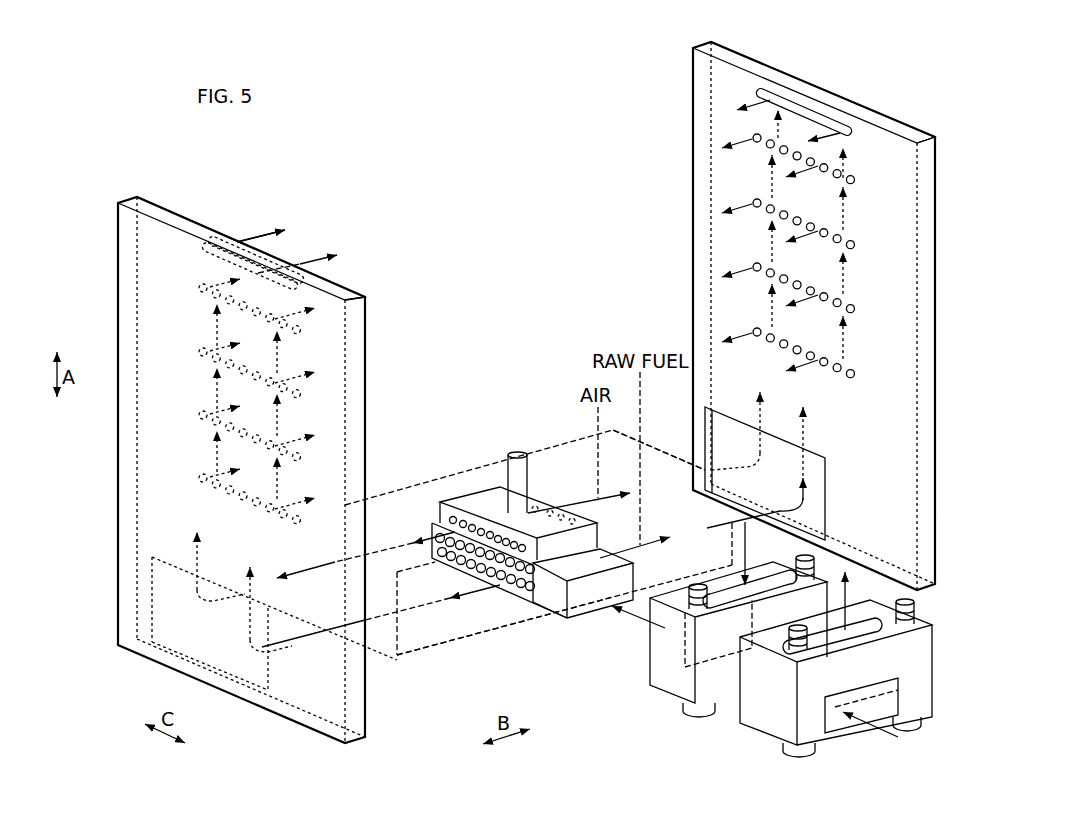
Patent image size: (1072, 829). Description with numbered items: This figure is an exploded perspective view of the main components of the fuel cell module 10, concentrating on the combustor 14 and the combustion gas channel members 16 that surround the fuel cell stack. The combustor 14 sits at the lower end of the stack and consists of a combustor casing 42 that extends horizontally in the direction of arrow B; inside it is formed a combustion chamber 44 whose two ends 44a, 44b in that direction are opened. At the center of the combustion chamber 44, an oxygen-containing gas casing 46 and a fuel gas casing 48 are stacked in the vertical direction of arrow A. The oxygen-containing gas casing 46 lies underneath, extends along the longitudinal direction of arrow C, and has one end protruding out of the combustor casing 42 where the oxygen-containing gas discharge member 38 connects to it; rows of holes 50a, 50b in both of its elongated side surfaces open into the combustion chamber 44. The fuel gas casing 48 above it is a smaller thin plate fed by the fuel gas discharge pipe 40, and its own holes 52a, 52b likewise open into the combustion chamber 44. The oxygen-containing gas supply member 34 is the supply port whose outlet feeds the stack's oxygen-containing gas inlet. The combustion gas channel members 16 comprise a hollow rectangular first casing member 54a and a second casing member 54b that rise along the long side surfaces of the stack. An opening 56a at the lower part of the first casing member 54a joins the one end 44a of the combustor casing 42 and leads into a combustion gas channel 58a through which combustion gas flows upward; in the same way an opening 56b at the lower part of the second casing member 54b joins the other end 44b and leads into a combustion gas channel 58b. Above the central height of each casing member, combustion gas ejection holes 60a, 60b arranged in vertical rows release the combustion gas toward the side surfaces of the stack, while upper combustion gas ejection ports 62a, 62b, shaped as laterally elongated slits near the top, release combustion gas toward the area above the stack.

The fuel cell module 10 is at (352, 142).
The combustor 14 is at (516, 538).
The combustion gas channel members 16 is at (952, 192).
The oxygen-containing gas supply member 34 is at (923, 652).
The oxygen-containing gas discharge member 38 is at (670, 690).
The fuel gas discharge pipe 40 is at (517, 451).
The combustor casing 42 is at (417, 653).
The combustion chamber 44 is at (457, 636).
The one end of combustion chamber 44a is at (657, 451).
The other end of combustion chamber 44b is at (323, 630).
The oxygen-containing gas casing 46 is at (563, 622).
The fuel gas casing 48 is at (492, 483).
The holes 50a is at (598, 583).
The holes 50b is at (528, 583).
The holes 52a is at (547, 520).
The holes 52b is at (453, 519).
The first casing member 54a is at (910, 127).
The second casing member 54b is at (162, 206).
The opening 56a is at (817, 510).
The opening 56b is at (166, 576).
The combustion gas channel 58a is at (893, 432).
The combustion gas channel 58b is at (152, 453).
The combustion gas ejection holes 60a is at (855, 308).
The combustion gas ejection holes 60b is at (203, 356).
The upper combustion gas ejection port 62a is at (804, 100).
The upper combustion gas ejection port 62b is at (216, 255).